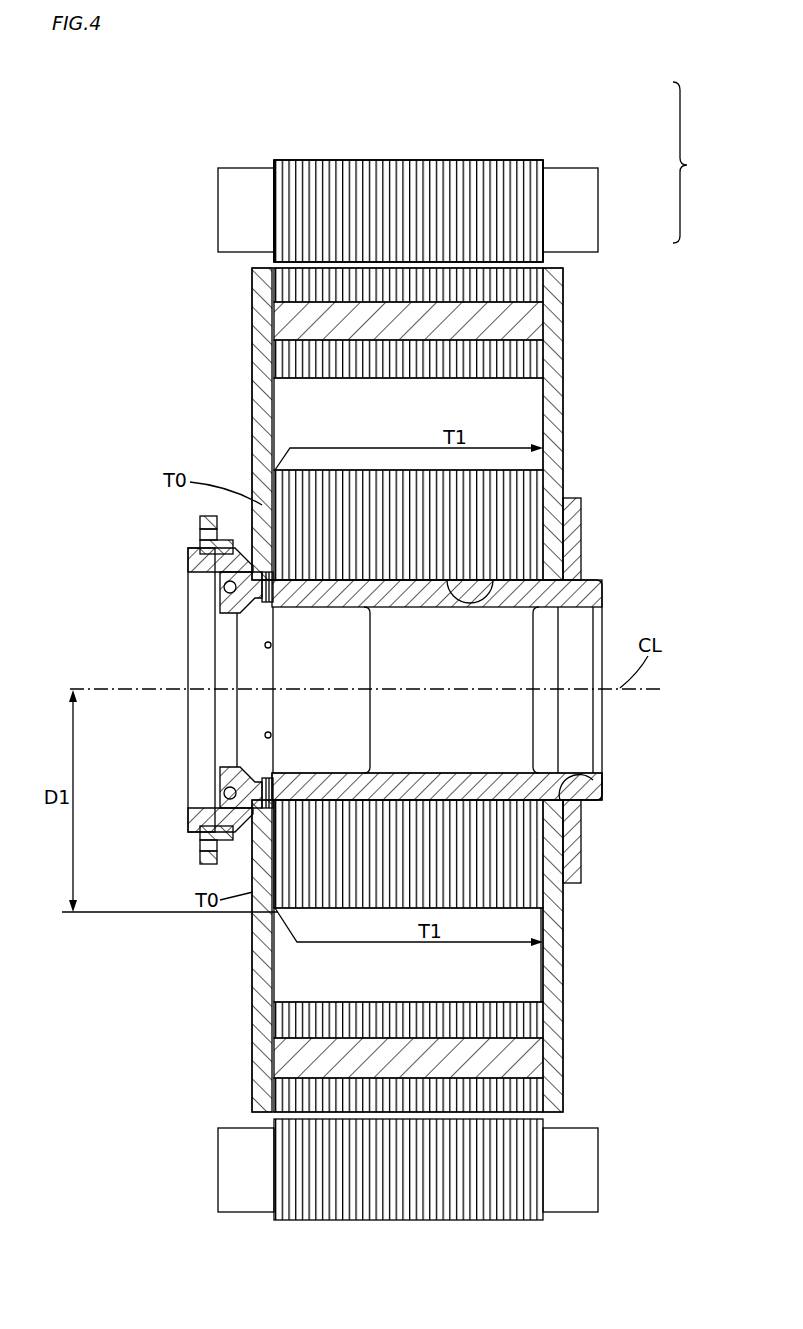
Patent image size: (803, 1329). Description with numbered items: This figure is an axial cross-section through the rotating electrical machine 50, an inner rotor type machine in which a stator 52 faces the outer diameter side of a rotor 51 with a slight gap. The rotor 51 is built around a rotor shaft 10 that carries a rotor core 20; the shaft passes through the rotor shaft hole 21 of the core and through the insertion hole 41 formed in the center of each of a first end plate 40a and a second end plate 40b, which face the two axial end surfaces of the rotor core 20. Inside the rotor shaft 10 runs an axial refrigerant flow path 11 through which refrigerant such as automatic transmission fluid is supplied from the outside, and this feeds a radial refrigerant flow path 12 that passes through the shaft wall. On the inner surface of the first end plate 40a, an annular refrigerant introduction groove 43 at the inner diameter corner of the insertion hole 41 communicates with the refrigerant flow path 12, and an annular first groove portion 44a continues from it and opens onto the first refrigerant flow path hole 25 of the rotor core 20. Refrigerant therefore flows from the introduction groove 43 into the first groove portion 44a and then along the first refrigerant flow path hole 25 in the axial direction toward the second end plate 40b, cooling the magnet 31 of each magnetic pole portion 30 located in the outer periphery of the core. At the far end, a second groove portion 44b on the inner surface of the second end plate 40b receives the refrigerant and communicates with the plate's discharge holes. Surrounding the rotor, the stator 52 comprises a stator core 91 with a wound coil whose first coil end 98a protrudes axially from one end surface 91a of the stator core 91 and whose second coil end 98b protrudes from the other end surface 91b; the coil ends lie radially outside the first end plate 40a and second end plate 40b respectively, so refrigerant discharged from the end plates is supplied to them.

The rotor shaft 10 is at (567, 575).
The refrigerant flow path 11 is at (500, 612).
The refrigerant flow path 12 is at (268, 735).
The rotor core 20 is at (449, 248).
The rotor shaft hole 21 is at (495, 583).
The first refrigerant flow path hole 25 is at (405, 400).
The magnetic pole portion 30 is at (408, 687).
The magnet 31 is at (372, 318).
The first end plate 40a is at (255, 955).
The second end plate 40b is at (557, 912).
The insertion hole 41 is at (590, 781).
The refrigerant introduction groove 43 is at (288, 773).
The first groove portion 44a is at (252, 885).
The second groove portion 44b is at (540, 957).
The rotating electrical machine 50 is at (498, 172).
The rotor 51 is at (587, 308).
The stator 52 is at (584, 150).
The stator core 91 is at (302, 193).
The one end surface 91a is at (274, 176).
The other end surface 91b is at (544, 177).
The first coil end 98a is at (238, 178).
The second coil end 98b is at (568, 176).